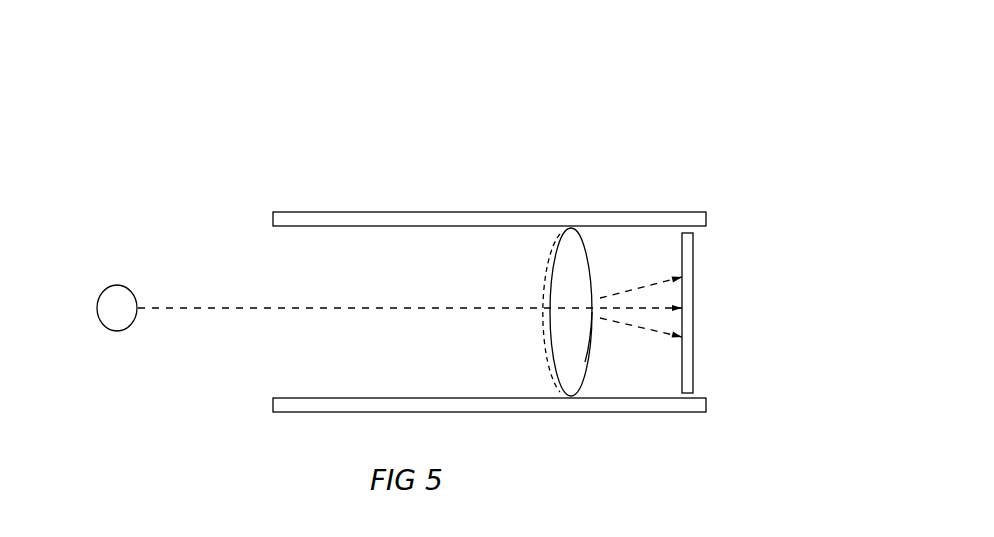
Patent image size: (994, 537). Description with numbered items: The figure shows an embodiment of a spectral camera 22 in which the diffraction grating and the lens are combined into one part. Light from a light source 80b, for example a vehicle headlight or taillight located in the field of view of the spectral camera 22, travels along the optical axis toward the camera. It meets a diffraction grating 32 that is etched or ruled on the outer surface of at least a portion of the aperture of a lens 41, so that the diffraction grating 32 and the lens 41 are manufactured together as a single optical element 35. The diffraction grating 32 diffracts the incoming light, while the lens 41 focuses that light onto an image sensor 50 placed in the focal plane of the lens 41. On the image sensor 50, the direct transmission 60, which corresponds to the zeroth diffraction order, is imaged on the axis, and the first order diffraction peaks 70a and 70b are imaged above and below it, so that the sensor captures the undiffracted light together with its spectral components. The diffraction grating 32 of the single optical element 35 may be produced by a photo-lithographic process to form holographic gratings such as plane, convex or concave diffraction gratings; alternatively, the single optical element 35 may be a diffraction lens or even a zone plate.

The spectral camera 22 is at (553, 77).
The diffraction grating 32 is at (560, 230).
The single optical element 35 is at (590, 363).
The lens 41 is at (580, 227).
The image sensor 50 is at (702, 215).
The direct transmission 60 is at (693, 313).
The first order diffraction peak 70a is at (693, 273).
The first order diffraction peak 70b is at (693, 348).
The light source 80b is at (107, 335).